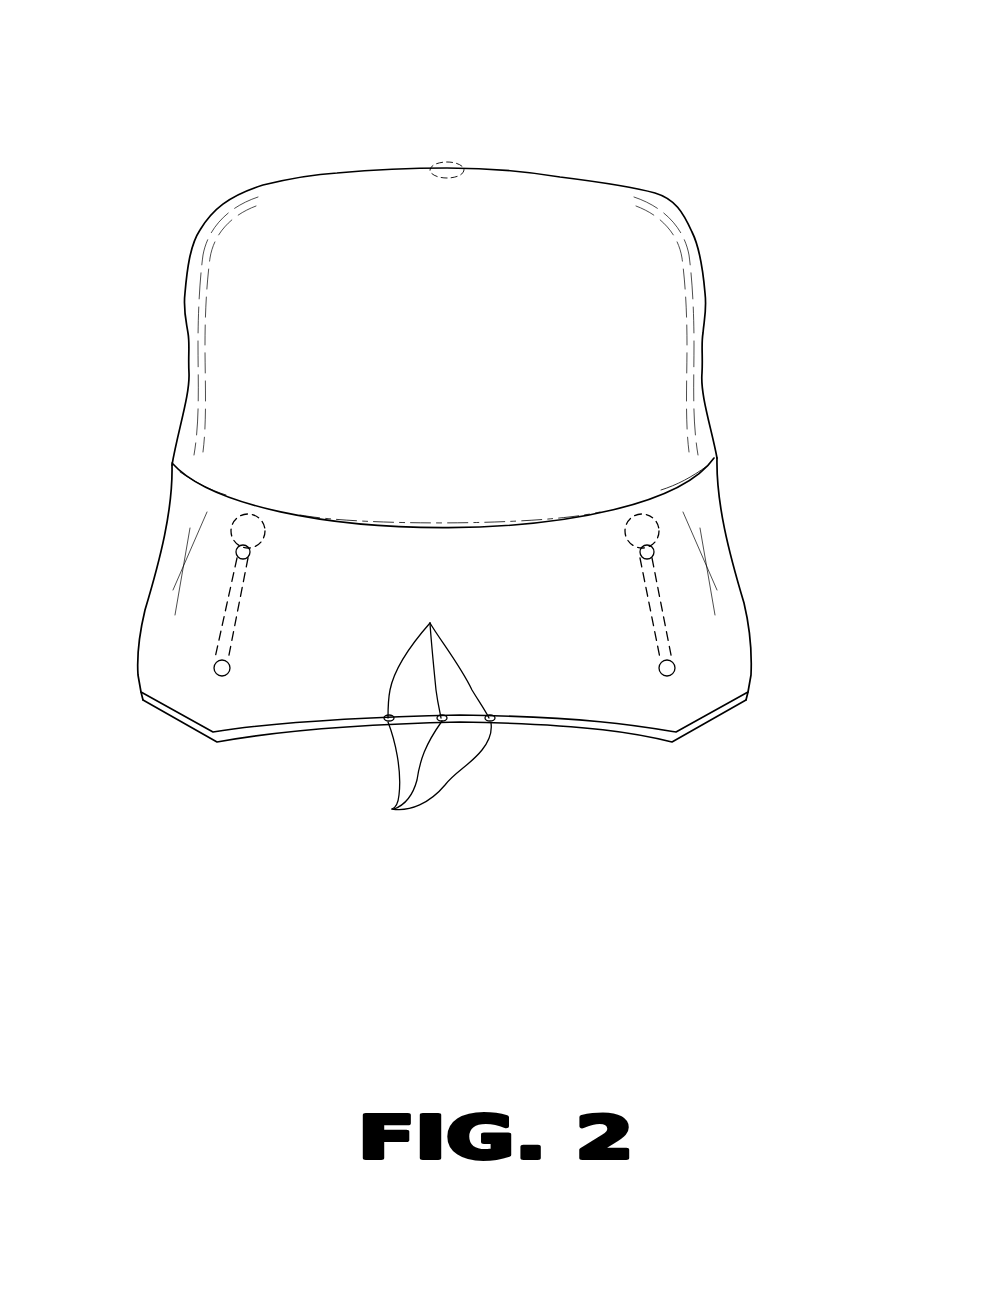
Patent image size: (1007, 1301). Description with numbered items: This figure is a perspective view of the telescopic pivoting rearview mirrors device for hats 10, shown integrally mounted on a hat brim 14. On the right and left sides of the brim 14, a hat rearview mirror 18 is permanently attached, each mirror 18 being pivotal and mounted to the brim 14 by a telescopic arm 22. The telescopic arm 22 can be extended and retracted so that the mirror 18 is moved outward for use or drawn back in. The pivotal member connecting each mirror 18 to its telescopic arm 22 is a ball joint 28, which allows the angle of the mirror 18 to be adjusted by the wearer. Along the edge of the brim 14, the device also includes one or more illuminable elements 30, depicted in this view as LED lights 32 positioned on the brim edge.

The telescopic pivoting rearview mirrors device for hats 10 is at (337, 173).
The hat brim 14 is at (551, 723).
The hat rearview mirror 18 is at (246, 524).
The telescopic arm 22 is at (233, 610).
The ball joint 28 is at (240, 549).
The illuminable element 30 is at (431, 788).
The LED light 32 is at (439, 647).